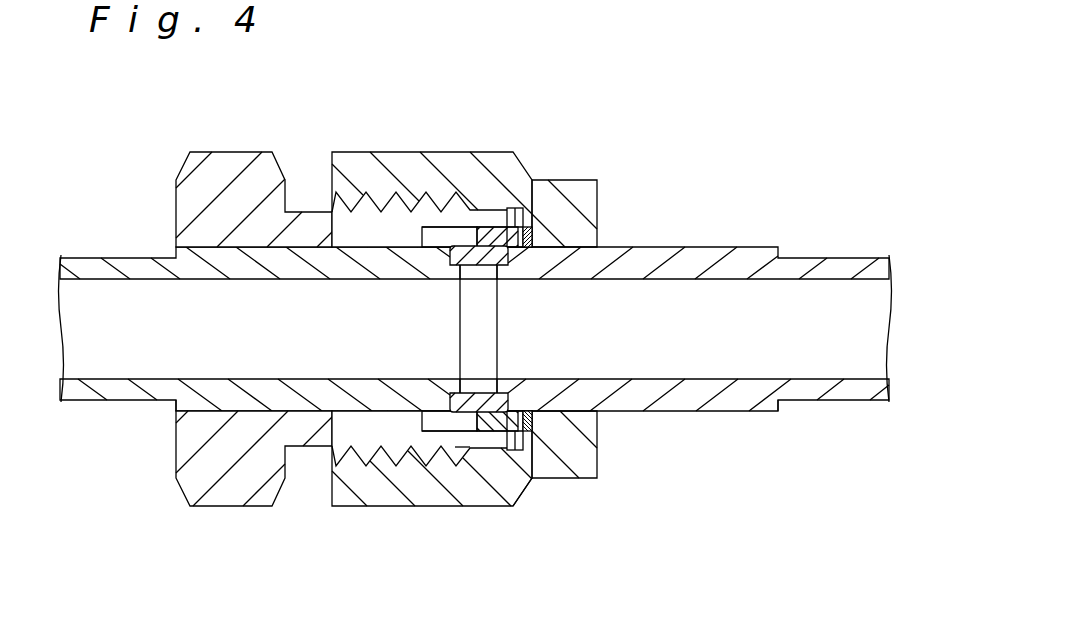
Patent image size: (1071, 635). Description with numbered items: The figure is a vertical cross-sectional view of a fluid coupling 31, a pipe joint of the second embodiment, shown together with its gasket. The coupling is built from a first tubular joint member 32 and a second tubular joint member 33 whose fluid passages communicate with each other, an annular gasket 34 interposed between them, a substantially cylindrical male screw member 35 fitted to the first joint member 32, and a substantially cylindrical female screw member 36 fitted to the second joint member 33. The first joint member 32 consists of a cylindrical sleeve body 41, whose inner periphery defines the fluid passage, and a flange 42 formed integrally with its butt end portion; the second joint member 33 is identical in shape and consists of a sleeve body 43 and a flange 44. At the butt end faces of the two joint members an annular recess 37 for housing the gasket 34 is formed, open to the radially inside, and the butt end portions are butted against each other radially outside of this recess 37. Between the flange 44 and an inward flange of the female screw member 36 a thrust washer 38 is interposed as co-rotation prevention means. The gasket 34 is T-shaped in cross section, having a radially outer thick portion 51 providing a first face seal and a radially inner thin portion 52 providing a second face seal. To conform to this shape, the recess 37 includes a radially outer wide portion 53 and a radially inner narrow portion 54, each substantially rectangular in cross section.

The fluid coupling 31 is at (814, 205).
The first tubular joint member 32 is at (120, 258).
The second tubular joint member 33 is at (817, 260).
The annular gasket 34 is at (537, 238).
The male screw member 35 is at (245, 152).
The female screw member 36 is at (505, 152).
The annular recess 37 is at (458, 245).
The thrust washer 38 is at (540, 238).
The sleeve body 41 is at (197, 400).
The flange 42 is at (432, 435).
The sleeve body 43 is at (747, 400).
The flange 44 is at (528, 480).
The thick portion 51 is at (465, 440).
The thin portion 52 is at (477, 392).
The wide portion 53 is at (470, 440).
The narrow portion 54 is at (482, 382).